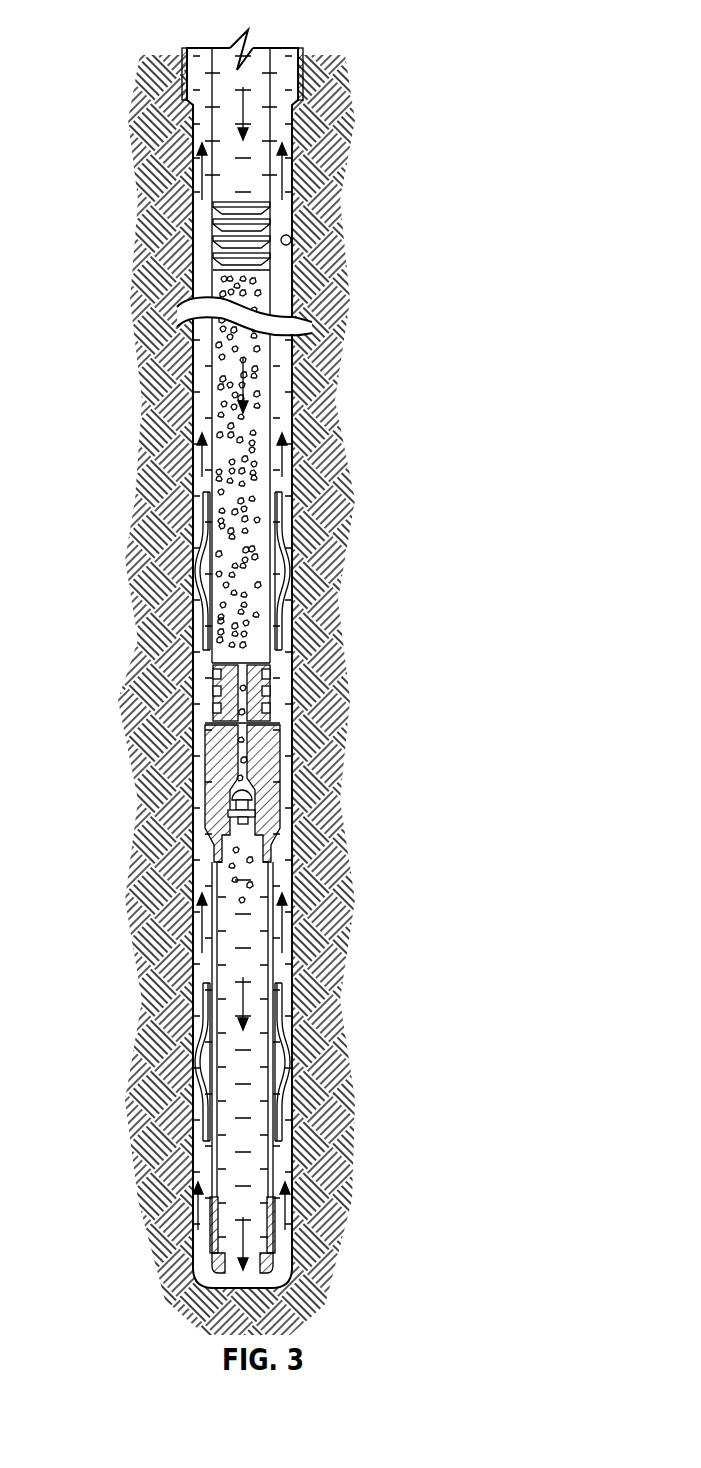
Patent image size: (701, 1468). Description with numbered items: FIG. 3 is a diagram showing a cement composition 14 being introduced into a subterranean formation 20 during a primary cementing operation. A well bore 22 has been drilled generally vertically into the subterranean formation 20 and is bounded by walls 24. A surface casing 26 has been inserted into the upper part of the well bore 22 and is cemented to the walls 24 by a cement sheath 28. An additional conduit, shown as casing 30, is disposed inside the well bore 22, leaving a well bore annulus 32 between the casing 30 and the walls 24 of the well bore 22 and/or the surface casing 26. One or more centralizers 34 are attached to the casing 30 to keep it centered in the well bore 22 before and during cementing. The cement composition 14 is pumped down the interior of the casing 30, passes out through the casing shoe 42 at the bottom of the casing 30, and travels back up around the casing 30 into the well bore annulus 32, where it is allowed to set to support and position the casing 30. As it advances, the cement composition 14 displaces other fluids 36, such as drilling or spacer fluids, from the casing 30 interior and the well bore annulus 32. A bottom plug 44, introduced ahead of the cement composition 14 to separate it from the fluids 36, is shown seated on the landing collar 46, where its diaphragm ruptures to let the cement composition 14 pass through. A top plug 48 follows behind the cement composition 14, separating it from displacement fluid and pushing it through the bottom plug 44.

The cement composition 14 is at (267, 388).
The subterranean formation 20 is at (422, 668).
The well bore 22 is at (304, 578).
The walls 24 is at (290, 246).
The surface casing 26 is at (285, 82).
The cement sheath 28 is at (292, 132).
The casing 30 is at (275, 492).
The well bore annulus 32 is at (200, 483).
The centralizers 34 is at (192, 998).
The fluids 36 is at (235, 1010).
The casing shoe 42 is at (197, 1250).
The bottom plug 44 is at (212, 692).
The landing collar 46 is at (205, 795).
The top plug 48 is at (220, 267).